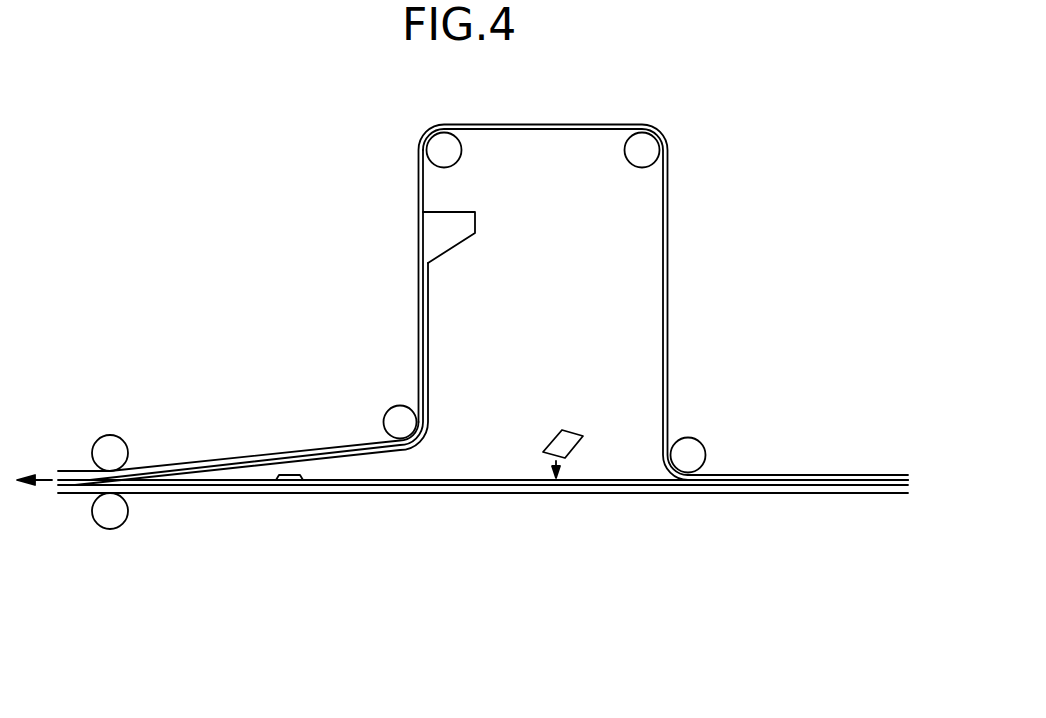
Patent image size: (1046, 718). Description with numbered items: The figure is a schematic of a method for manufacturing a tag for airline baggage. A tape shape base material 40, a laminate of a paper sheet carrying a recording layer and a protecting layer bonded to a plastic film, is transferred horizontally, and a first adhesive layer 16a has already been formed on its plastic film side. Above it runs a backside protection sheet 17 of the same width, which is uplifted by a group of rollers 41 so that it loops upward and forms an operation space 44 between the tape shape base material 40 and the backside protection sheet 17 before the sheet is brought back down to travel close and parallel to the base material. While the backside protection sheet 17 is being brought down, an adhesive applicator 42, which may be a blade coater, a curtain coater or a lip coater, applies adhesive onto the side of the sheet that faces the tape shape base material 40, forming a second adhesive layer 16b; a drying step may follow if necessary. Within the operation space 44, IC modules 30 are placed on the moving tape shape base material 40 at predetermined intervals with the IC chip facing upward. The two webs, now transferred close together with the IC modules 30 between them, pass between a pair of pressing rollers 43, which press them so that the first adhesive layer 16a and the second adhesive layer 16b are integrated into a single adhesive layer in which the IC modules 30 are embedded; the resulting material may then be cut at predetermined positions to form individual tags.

The first adhesive layer 16a is at (613, 481).
The second adhesive layer 16b is at (429, 330).
The backside protection sheet 17 is at (668, 263).
The IC module 30 is at (575, 430).
The tape shape base material 40 is at (489, 487).
The group of rollers 41 is at (462, 150).
The adhesive applicator 42 is at (463, 212).
The pressing rollers 43 is at (112, 435).
The operation space 44 is at (613, 308).